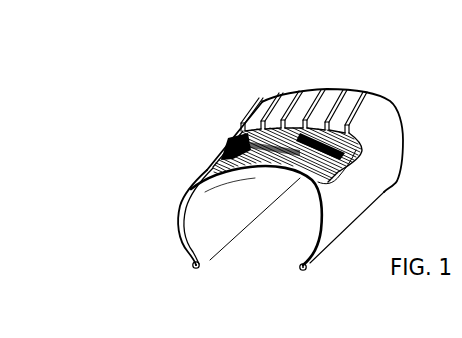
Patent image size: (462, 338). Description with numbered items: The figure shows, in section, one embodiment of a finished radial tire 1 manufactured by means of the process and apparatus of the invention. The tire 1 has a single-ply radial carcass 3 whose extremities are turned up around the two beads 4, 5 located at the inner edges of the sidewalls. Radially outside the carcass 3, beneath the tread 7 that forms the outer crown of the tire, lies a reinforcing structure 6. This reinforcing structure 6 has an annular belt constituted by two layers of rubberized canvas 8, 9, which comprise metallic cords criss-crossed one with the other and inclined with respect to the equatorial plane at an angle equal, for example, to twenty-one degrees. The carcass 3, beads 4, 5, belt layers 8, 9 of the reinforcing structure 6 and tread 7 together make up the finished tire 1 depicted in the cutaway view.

The tire 1 is at (402, 112).
The single-ply radial carcass 3 is at (303, 258).
The bead 4 is at (192, 268).
The bead 5 is at (307, 271).
The reinforcing structure 6 is at (328, 161).
The tread 7 is at (338, 92).
The layer of rubberized canvas 8 is at (228, 156).
The layer of rubberized canvas 9 is at (232, 148).